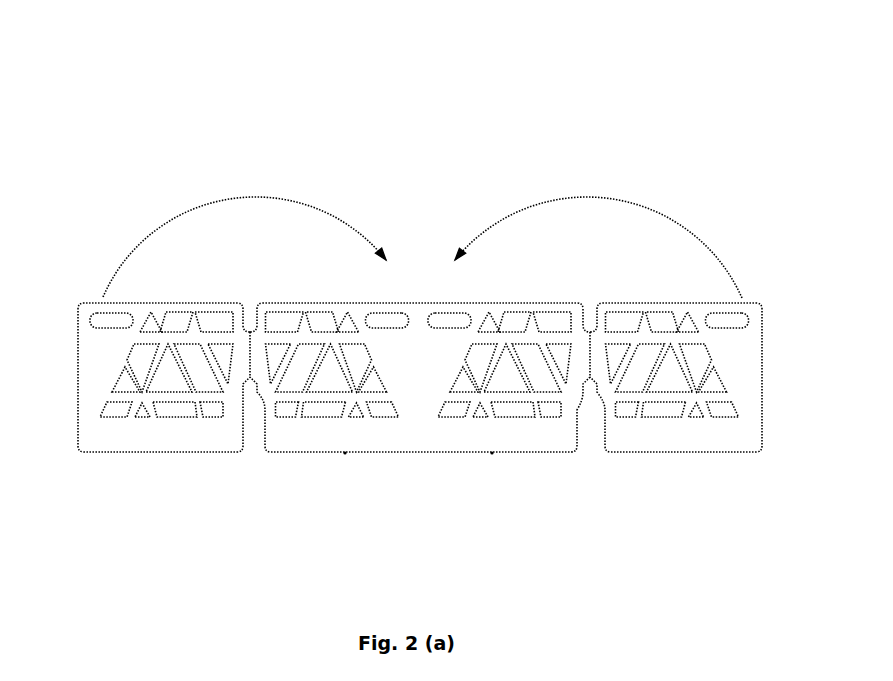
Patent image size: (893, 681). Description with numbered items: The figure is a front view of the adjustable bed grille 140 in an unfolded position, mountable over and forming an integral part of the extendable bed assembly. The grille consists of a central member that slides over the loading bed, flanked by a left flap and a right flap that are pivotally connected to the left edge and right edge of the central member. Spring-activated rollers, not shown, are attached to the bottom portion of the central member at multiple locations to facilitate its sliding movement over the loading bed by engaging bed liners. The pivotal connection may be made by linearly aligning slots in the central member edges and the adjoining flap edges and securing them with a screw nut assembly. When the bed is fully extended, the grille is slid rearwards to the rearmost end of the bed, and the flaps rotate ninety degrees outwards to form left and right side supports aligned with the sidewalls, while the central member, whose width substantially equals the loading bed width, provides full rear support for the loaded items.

The adjustable bed grille 140 is at (507, 150).